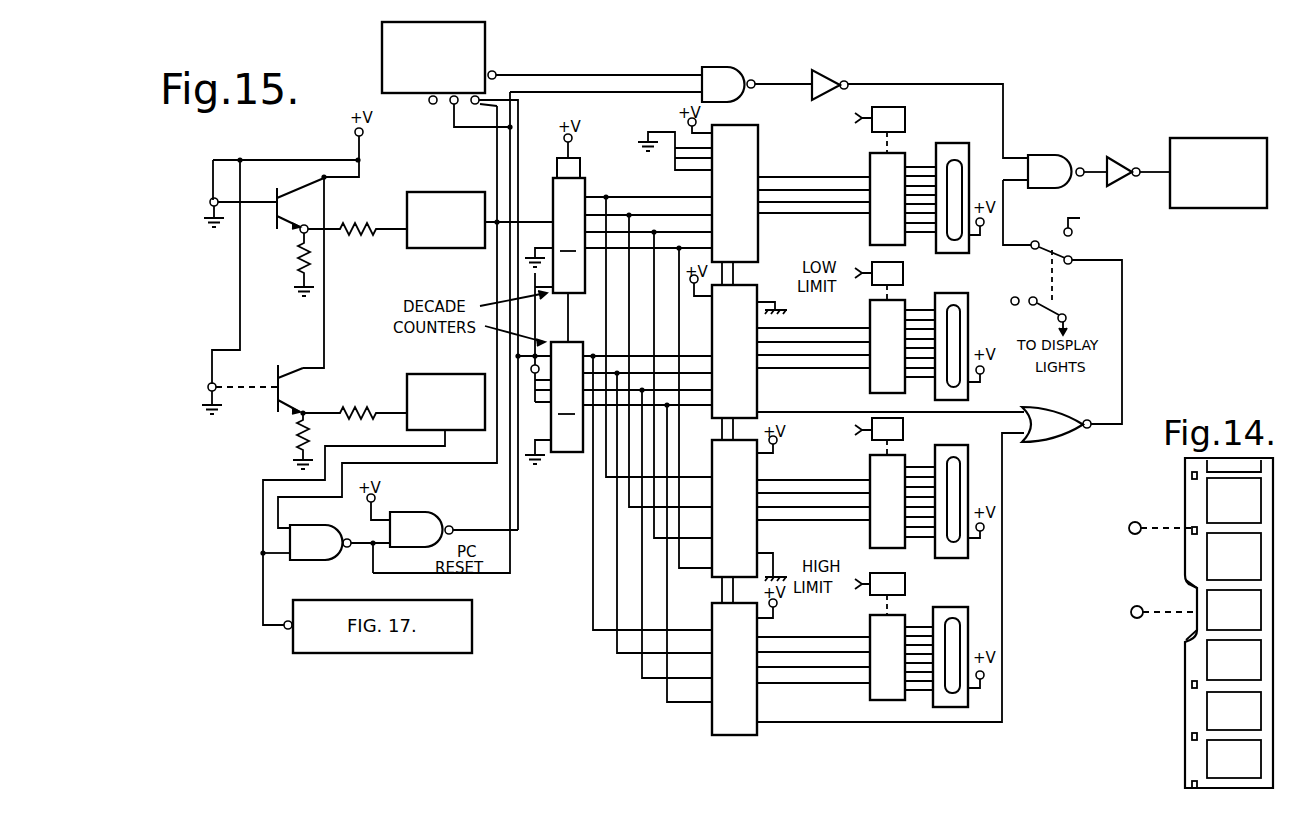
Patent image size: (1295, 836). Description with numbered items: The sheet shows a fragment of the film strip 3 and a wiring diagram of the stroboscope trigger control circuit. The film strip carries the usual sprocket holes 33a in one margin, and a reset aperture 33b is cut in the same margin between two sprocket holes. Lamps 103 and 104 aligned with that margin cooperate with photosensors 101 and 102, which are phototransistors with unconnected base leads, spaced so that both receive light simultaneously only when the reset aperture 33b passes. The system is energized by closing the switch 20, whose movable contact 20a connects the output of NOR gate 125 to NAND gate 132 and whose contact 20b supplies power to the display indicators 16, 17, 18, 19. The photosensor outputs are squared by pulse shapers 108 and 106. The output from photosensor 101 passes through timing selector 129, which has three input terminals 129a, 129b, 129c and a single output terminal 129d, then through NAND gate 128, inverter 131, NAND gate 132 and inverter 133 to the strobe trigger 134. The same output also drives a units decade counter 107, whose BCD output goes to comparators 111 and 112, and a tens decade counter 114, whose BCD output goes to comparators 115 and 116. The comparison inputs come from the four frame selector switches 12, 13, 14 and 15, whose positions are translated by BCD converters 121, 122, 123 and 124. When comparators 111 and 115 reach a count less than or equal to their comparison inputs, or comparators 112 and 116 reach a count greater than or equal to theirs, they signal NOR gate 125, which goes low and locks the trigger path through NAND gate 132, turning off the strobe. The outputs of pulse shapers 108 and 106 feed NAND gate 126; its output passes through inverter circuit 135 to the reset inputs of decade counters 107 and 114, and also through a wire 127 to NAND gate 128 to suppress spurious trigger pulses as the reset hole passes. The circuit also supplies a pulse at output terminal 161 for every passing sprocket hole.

In FIG. 14, the film strip 3 is at (1267, 553).
In FIG. 14, the sprocket holes 33a is at (1188, 476).
In FIG. 14, the reset aperture 33b is at (1193, 637).
In FIG. 15, the photosensor 101 is at (277, 190).
In FIG. 14, the photosensor 101 is at (1128, 530).
In FIG. 15, the photosensor 102 is at (277, 378).
In FIG. 14, the photosensor 102 is at (1130, 614).
In FIG. 15, the lamp 103 is at (210, 205).
In FIG. 15, the lamp 104 is at (208, 392).
In FIG. 15, the pulse shaper 106 is at (430, 374).
In FIG. 15, the decade counter 107 is at (569, 225).
In FIG. 15, the pulse shaper 108 is at (420, 249).
In FIG. 15, the comparator 111 is at (758, 237).
In FIG. 15, the comparator 112 is at (758, 470).
In FIG. 15, the decade counter 114 is at (567, 397).
In FIG. 15, the comparator 115 is at (757, 322).
In FIG. 15, the comparator 116 is at (757, 628).
In FIG. 15, the frame selector switch 12 is at (969, 157).
In FIG. 15, the frame selector switch 13 is at (968, 312).
In FIG. 15, the frame selector switch 14 is at (965, 478).
In FIG. 15, the frame selector switch 15 is at (963, 630).
In FIG. 15, the digital numerical display 16 is at (905, 119).
In FIG. 15, the digital numerical display 17 is at (903, 273).
In FIG. 15, the digital numerical display 18 is at (903, 430).
In FIG. 15, the digital numerical display 19 is at (905, 585).
In FIG. 15, the switch 20 is at (1063, 318).
In FIG. 15, the movable contact 20a is at (1074, 250).
In FIG. 15, the movable contact 20b is at (1064, 306).
In FIG. 15, the BCD converter 121 is at (870, 236).
In FIG. 15, the BCD converter 122 is at (870, 318).
In FIG. 15, the BCD converter 123 is at (870, 470).
In FIG. 15, the BCD converter 124 is at (870, 626).
In FIG. 15, the NOR gate 125 is at (1053, 408).
In FIG. 15, the NAND gate 126 is at (340, 521).
In FIG. 15, the wire 127 is at (508, 490).
In FIG. 15, the NAND gate 128 is at (728, 68).
In FIG. 15, the timing selector 129 is at (382, 52).
In FIG. 15, the input terminal 129a is at (433, 104).
In FIG. 15, the input terminal 129b is at (454, 127).
In FIG. 15, the input terminal 129c is at (523, 106).
In FIG. 15, the output terminal 129d is at (496, 71).
In FIG. 15, the inverter 131 is at (836, 76).
In FIG. 15, the NAND gate 132 is at (1042, 156).
In FIG. 15, the inverter 133 is at (1115, 159).
In FIG. 15, the strobe trigger 134 is at (1190, 138).
In FIG. 15, the inverter circuit 135 is at (426, 500).
In FIG. 15, the output terminal 161 is at (287, 630).